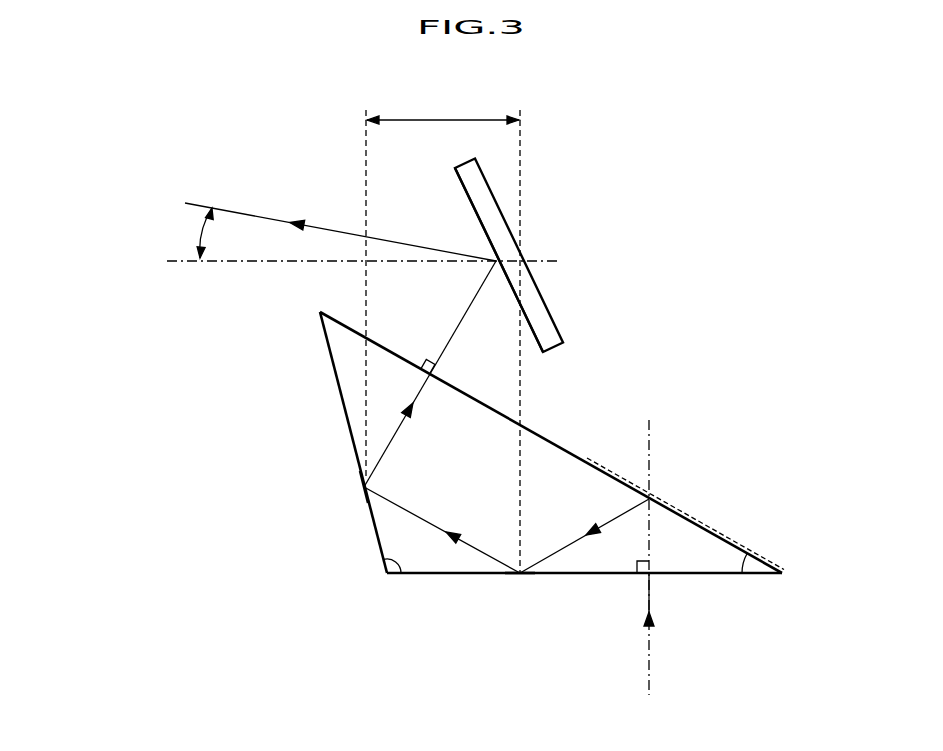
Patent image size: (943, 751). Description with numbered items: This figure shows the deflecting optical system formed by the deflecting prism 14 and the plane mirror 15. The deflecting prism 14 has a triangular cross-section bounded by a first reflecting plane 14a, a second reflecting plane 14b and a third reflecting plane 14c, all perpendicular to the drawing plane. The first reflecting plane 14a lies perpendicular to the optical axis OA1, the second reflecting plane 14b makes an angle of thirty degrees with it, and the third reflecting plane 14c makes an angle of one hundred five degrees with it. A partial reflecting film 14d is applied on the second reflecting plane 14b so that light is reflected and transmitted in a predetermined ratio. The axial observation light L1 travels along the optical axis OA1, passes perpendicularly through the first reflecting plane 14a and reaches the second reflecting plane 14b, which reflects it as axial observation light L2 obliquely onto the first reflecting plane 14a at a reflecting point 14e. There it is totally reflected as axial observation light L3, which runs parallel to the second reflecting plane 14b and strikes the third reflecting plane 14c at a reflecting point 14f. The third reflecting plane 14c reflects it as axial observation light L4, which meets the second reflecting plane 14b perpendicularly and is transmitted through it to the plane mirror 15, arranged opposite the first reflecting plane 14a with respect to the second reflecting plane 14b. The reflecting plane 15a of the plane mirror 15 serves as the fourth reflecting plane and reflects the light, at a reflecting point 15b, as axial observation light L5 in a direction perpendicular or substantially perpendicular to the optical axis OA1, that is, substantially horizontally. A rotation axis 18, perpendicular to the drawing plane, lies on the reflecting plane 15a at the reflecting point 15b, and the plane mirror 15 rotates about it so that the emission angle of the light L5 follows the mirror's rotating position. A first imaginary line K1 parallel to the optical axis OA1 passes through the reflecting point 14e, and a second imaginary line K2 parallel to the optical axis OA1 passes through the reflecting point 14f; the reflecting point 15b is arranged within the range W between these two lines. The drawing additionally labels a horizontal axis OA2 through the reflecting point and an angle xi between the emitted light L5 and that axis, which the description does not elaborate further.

The deflecting prism 14 is at (523, 475).
The first reflecting plane 14a is at (444, 576).
The second reflecting plane 14b is at (553, 443).
The third reflecting plane 14c is at (345, 412).
The partial reflecting film 14d is at (690, 513).
The reflecting point 14e is at (520, 577).
The reflecting point 14f is at (362, 487).
The plane mirror 15 is at (476, 173).
The reflecting plane 15a is at (467, 193).
The reflecting point 15b is at (510, 252).
The rotation axis 18 is at (552, 278).
The axial observation light L1 is at (652, 598).
The axial observation light L2 is at (552, 552).
The axial observation light L3 is at (475, 547).
The axial observation light L4 is at (392, 441).
The axial observation light L5 is at (306, 224).
The first imaginary line K1 is at (523, 137).
The second imaginary line K2 is at (362, 137).
The range W is at (442, 118).
The optical axis OA1 is at (652, 672).
The optical axis OA2 is at (227, 264).
The deflection angle xi is at (189, 233).